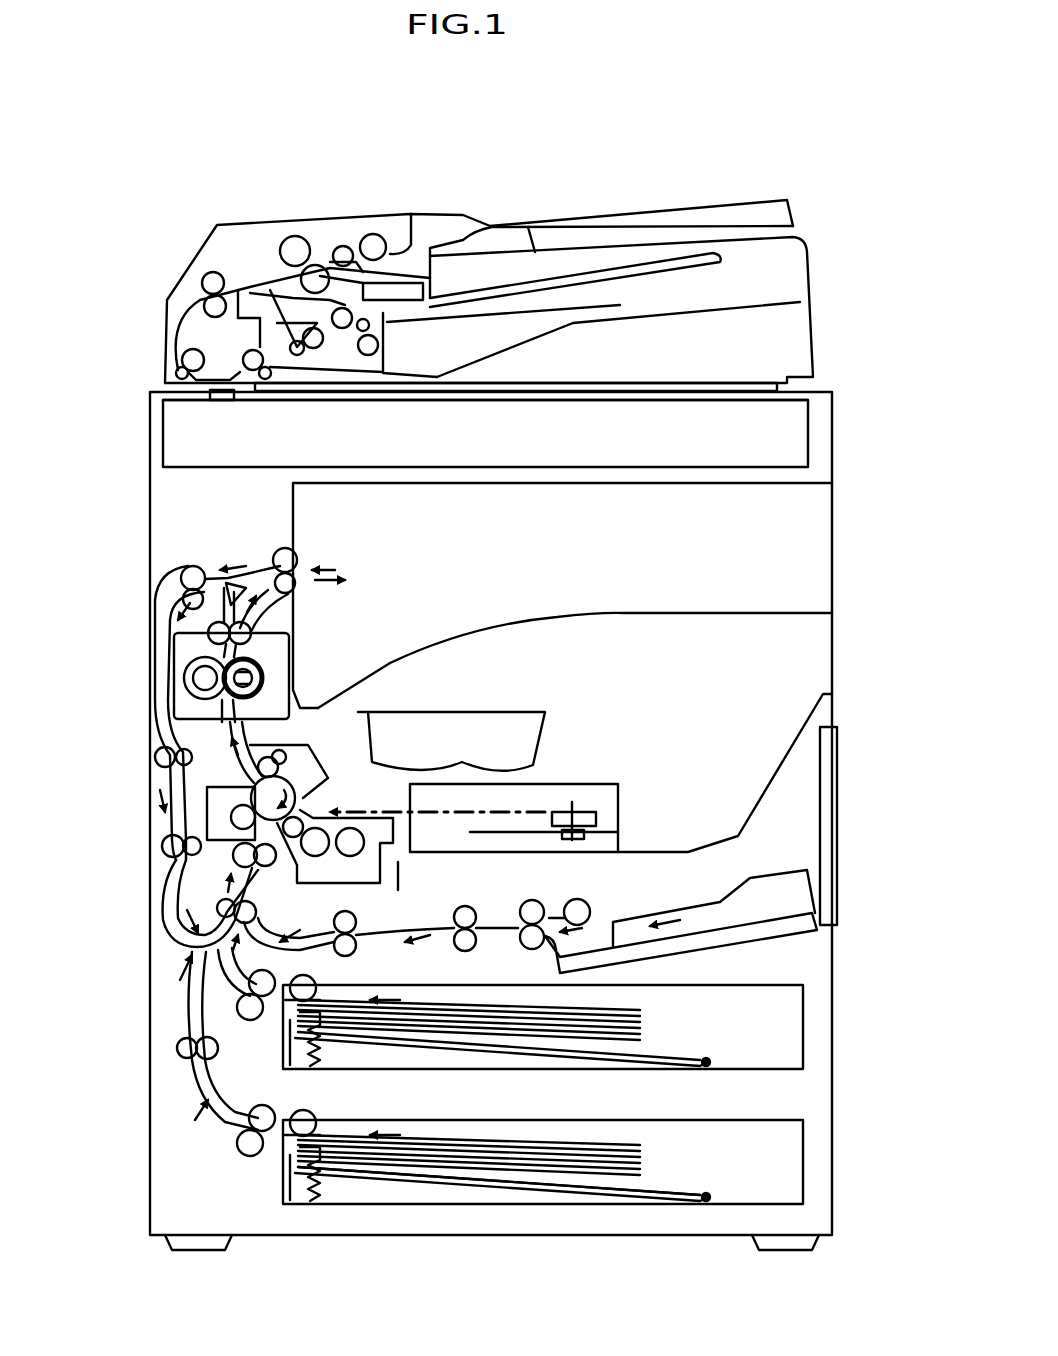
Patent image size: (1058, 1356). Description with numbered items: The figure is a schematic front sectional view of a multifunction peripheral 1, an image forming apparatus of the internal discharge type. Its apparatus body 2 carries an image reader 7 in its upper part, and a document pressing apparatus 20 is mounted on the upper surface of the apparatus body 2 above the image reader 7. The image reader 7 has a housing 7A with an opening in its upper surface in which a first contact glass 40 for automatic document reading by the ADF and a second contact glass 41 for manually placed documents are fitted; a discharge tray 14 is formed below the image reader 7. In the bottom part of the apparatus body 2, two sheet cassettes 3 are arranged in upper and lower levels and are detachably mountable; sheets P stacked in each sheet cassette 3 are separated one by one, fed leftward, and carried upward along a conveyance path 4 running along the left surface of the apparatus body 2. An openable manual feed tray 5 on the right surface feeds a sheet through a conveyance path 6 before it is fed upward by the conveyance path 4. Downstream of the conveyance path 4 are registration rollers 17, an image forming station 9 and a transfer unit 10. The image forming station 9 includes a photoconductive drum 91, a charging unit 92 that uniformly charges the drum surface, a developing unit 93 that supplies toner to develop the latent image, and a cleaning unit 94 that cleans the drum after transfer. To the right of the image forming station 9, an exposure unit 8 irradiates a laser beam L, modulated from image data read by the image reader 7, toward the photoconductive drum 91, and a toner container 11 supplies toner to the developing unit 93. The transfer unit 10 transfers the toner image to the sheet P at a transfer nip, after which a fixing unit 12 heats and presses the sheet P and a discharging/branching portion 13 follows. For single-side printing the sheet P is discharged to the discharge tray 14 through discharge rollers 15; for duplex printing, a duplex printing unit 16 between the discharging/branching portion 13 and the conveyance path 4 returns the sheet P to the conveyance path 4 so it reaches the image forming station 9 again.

The multifunction peripheral 1 is at (676, 152).
The apparatus body 2 is at (862, 384).
The sheet cassette 3 is at (804, 1028).
The conveyance path 4 is at (185, 1017).
The manual feed tray 5 is at (795, 892).
The conveyance path 6 is at (440, 910).
The image reader 7 is at (770, 432).
The housing 7A is at (818, 426).
The exposure unit 8 is at (594, 784).
The image forming station 9 is at (315, 740).
The transfer unit 10 is at (208, 812).
The toner container 11 is at (488, 712).
The fixing unit 12 is at (175, 668).
The discharging/branching portion 13 is at (226, 560).
The discharge tray 14 is at (400, 656).
The discharge rollers 15 is at (300, 550).
The duplex printing unit 16 is at (170, 738).
The registration rollers 17 is at (236, 854).
The document pressing apparatus 20 is at (436, 214).
The first contact glass 40 is at (222, 400).
The second contact glass 41 is at (490, 396).
The photoconductive drum 91 is at (230, 775).
The charging unit 92 is at (322, 776).
The developing unit 93 is at (347, 883).
The cleaning unit 94 is at (290, 745).
The laser beam L is at (437, 859).
The sheet P is at (548, 1180).